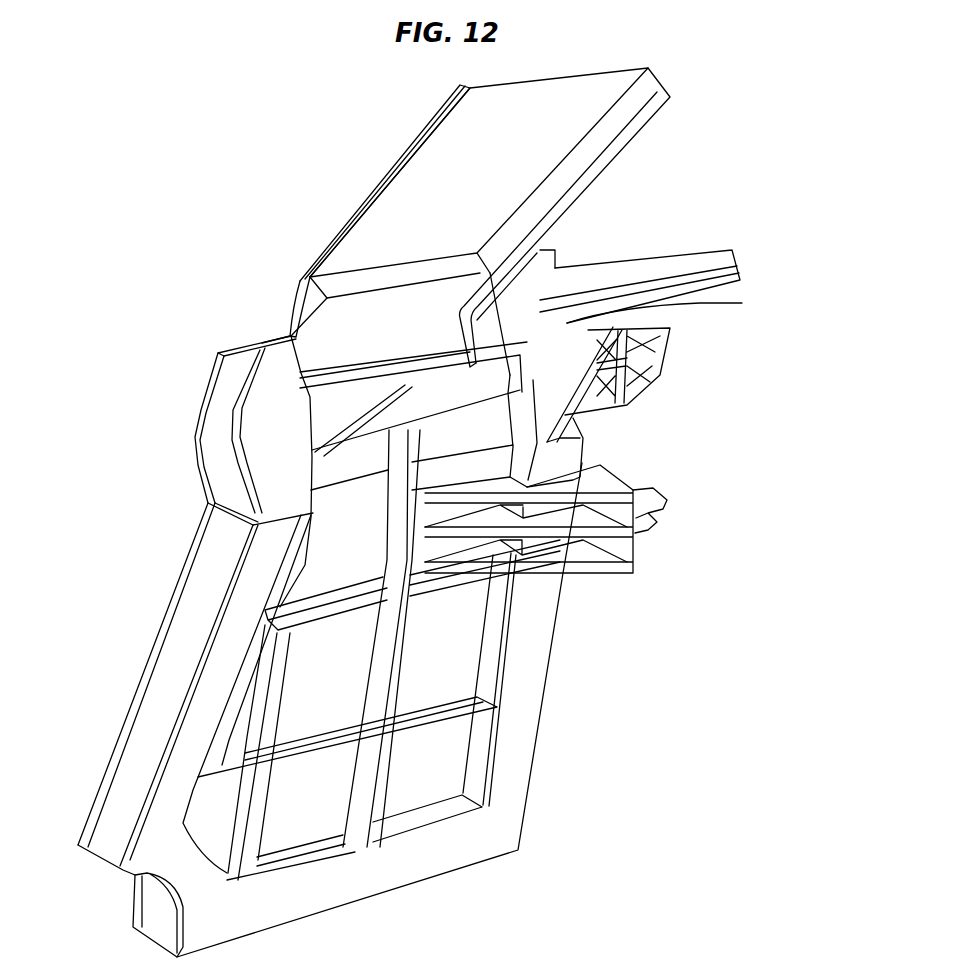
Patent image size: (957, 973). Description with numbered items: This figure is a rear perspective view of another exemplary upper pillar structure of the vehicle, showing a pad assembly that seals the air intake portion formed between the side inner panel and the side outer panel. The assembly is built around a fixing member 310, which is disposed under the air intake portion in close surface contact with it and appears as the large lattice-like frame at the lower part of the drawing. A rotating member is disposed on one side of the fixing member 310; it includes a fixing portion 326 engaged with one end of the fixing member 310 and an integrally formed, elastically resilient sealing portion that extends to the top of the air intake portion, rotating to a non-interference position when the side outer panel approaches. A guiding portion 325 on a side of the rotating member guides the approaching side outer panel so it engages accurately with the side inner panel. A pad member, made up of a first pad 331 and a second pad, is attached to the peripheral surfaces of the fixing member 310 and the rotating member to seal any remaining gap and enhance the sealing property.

The fixing member 310 is at (200, 702).
The guiding portion 325 is at (400, 153).
The fixing portion 326 is at (742, 303).
The first pad 331 is at (215, 443).